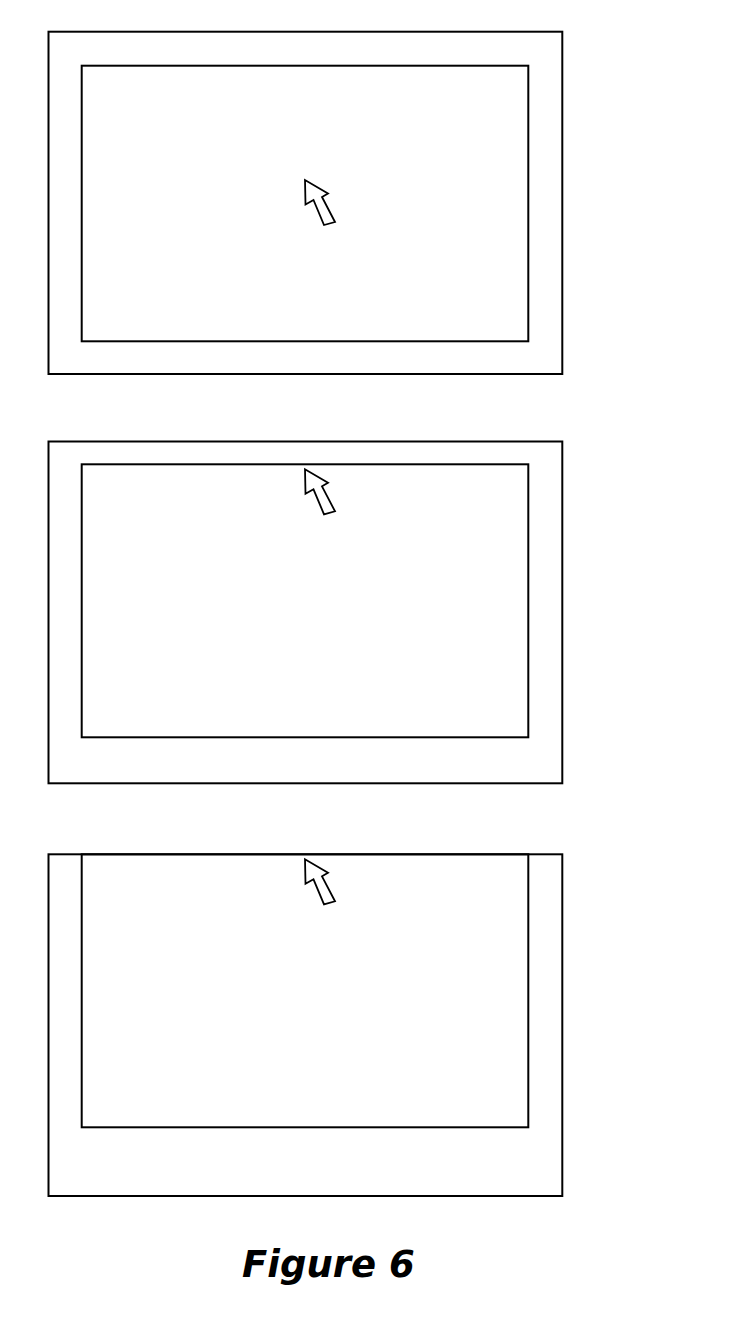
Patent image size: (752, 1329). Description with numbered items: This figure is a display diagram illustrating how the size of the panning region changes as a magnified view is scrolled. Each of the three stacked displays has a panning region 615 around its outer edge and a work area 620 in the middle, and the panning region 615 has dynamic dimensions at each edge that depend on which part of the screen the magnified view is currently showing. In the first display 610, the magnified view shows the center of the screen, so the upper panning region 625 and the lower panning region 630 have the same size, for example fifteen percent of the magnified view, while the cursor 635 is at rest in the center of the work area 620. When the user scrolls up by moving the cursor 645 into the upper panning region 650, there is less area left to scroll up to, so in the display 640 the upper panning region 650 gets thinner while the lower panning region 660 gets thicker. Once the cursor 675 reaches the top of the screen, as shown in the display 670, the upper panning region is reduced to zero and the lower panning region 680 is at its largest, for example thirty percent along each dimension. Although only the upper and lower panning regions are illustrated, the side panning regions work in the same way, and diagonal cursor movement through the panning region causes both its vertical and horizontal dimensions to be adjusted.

The first display 610 is at (341, 193).
The panning region 615 is at (548, 100).
The work area 620 is at (493, 150).
The upper panning region 625 is at (324, 52).
The lower panning region 630 is at (324, 361).
The cursor 635 is at (330, 210).
The display 640 is at (306, 602).
The cursor 645 is at (330, 500).
The upper panning region 650 is at (324, 459).
The lower panning region 660 is at (324, 765).
The display 670 is at (306, 1015).
The cursor 675 is at (330, 891).
The lower panning region 680 is at (324, 1166).